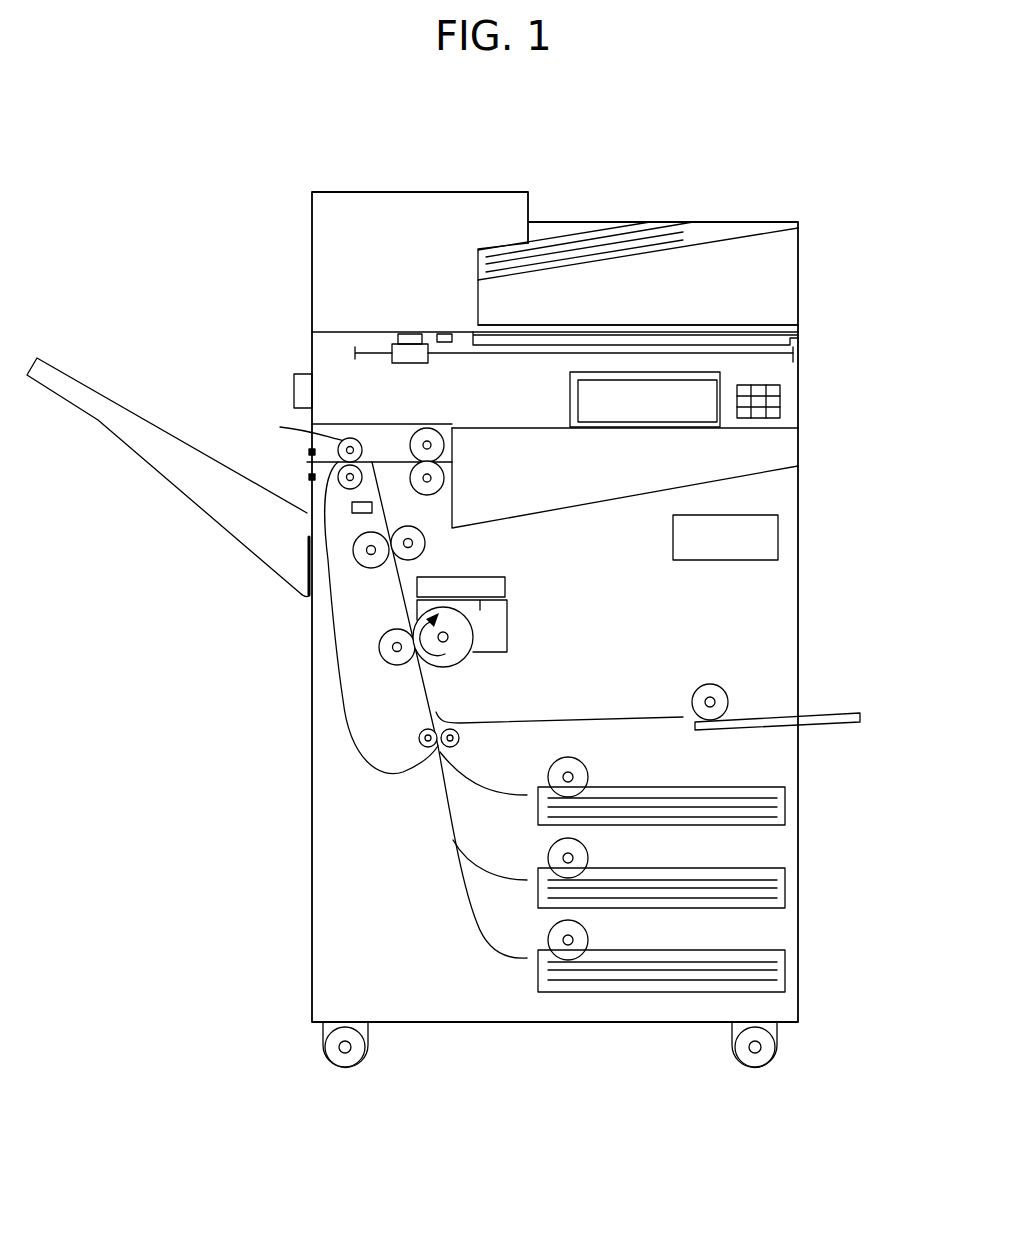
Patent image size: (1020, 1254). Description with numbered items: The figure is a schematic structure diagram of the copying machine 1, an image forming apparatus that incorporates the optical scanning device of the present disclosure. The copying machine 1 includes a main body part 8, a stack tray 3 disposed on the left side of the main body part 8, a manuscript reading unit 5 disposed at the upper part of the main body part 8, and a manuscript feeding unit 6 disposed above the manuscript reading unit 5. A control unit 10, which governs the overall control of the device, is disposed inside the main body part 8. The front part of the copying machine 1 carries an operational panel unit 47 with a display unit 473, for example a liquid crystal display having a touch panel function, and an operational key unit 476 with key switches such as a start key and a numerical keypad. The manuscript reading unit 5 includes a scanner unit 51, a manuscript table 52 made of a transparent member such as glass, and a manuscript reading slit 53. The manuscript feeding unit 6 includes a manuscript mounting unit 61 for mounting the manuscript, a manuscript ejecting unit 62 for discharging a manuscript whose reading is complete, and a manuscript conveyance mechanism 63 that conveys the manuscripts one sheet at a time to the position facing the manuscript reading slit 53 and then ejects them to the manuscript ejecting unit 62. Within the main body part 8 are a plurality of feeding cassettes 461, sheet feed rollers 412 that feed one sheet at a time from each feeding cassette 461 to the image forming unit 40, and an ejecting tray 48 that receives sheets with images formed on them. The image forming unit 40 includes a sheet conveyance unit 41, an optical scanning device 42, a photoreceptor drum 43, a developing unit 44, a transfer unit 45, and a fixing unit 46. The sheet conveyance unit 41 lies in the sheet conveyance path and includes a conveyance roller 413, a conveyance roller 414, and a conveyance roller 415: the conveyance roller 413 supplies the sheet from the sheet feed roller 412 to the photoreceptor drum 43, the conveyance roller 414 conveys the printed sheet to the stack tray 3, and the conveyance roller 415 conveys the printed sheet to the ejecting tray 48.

The copying machine 1 is at (115, 187).
The stack tray 3 is at (182, 508).
The manuscript reading unit 5 is at (326, 363).
The manuscript feeding unit 6 is at (596, 218).
The main body part 8 is at (775, 628).
The control unit 10 is at (780, 537).
The image forming unit 40 is at (360, 633).
The sheet conveyance unit 41 is at (426, 870).
The optical scanning device 42 is at (505, 587).
The photoreceptor drum 43 is at (458, 655).
The developing unit 44 is at (507, 630).
The transfer unit 45 is at (385, 665).
The fixing unit 46 is at (377, 583).
The operational panel unit 47 is at (568, 398).
The ejecting tray 48 is at (625, 510).
The scanner unit 51 is at (410, 364).
The manuscript table 52 is at (794, 342).
The manuscript reading slit 53 is at (403, 336).
The manuscript mounting unit 61 is at (708, 232).
The manuscript ejecting unit 62 is at (727, 325).
The manuscript conveyance mechanism 63 is at (396, 278).
The sheet feed roller 412 is at (588, 778).
The conveyance roller 413 is at (420, 747).
The conveyance roller 414 is at (340, 438).
The conveyance roller 415 is at (445, 446).
The feeding cassette 461 is at (785, 813).
The display unit 473 is at (630, 410).
The operational key unit 476 is at (757, 420).